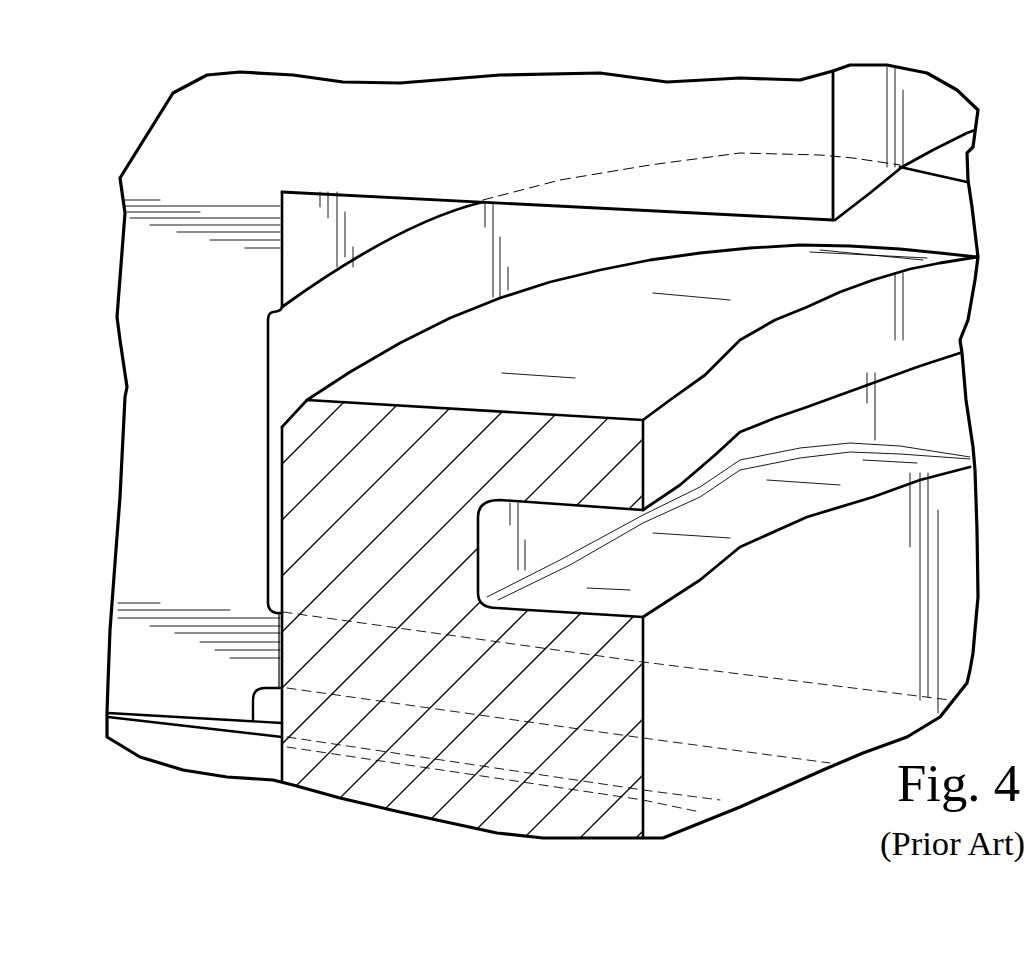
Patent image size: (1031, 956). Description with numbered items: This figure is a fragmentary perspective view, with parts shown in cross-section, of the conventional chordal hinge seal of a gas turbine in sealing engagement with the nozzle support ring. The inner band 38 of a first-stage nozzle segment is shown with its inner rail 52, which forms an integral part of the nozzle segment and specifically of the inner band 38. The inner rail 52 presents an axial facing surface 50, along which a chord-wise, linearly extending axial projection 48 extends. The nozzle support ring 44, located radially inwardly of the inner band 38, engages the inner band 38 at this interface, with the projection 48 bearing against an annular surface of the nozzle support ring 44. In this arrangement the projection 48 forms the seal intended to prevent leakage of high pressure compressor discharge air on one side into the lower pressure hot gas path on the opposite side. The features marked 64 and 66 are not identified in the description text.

The inner band 38 is at (197, 112).
The nozzle support ring 44 is at (373, 790).
The axial projection 48 is at (273, 668).
The axial facing surface 50 is at (287, 334).
The inner rail 52 is at (172, 438).
The curved ledge band 64 is at (557, 372).
The corner notch 66 is at (882, 183).